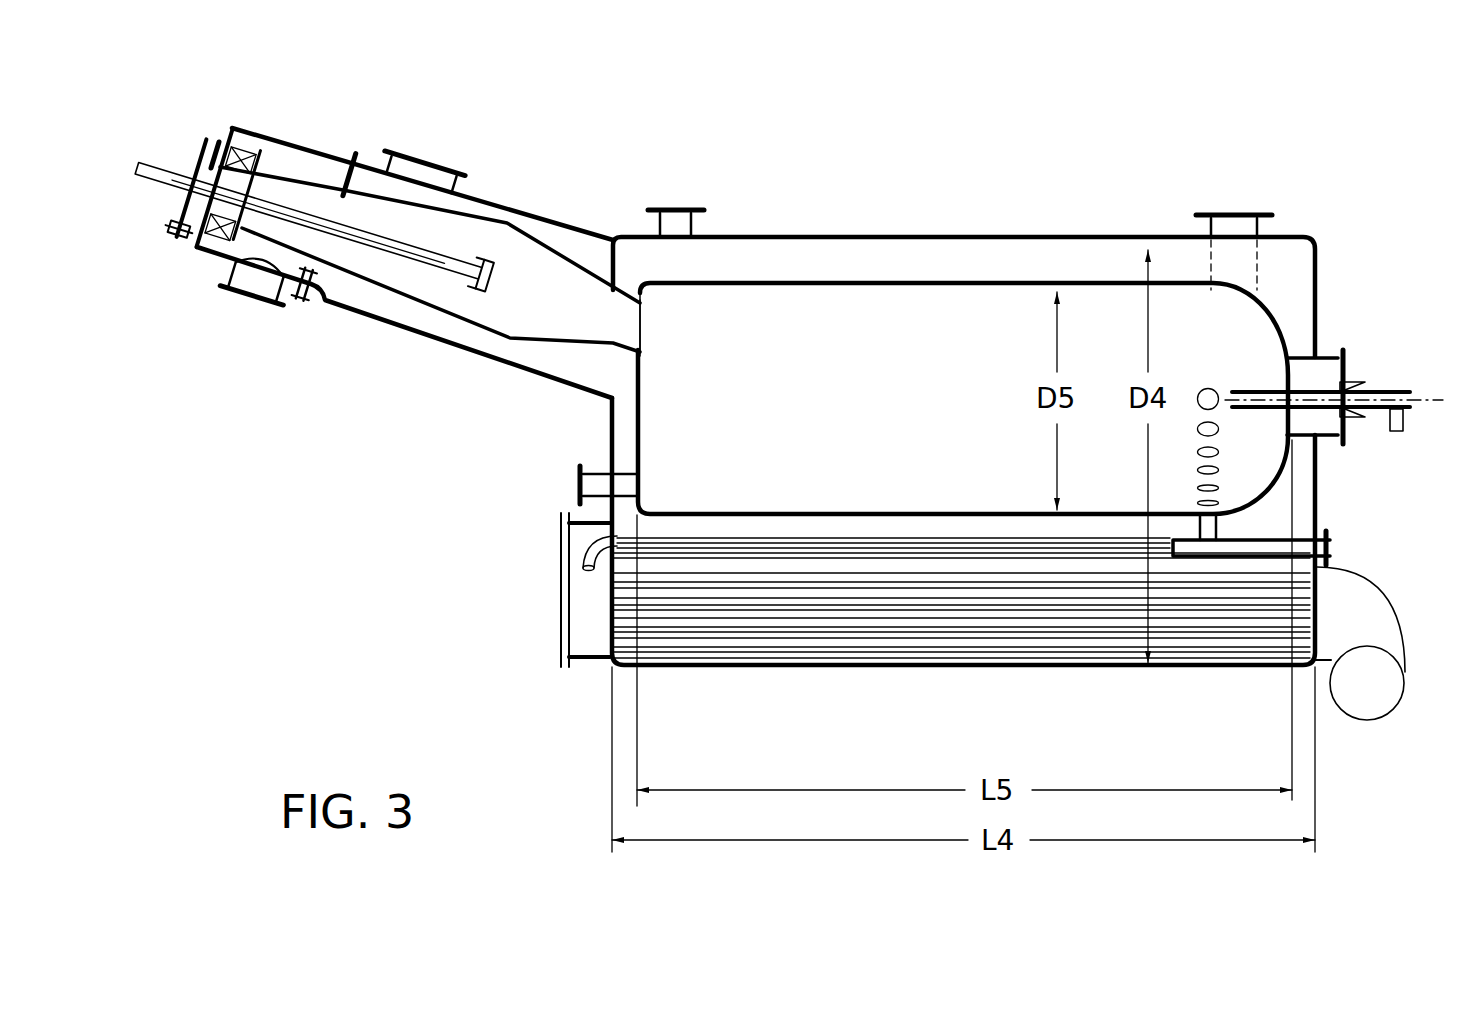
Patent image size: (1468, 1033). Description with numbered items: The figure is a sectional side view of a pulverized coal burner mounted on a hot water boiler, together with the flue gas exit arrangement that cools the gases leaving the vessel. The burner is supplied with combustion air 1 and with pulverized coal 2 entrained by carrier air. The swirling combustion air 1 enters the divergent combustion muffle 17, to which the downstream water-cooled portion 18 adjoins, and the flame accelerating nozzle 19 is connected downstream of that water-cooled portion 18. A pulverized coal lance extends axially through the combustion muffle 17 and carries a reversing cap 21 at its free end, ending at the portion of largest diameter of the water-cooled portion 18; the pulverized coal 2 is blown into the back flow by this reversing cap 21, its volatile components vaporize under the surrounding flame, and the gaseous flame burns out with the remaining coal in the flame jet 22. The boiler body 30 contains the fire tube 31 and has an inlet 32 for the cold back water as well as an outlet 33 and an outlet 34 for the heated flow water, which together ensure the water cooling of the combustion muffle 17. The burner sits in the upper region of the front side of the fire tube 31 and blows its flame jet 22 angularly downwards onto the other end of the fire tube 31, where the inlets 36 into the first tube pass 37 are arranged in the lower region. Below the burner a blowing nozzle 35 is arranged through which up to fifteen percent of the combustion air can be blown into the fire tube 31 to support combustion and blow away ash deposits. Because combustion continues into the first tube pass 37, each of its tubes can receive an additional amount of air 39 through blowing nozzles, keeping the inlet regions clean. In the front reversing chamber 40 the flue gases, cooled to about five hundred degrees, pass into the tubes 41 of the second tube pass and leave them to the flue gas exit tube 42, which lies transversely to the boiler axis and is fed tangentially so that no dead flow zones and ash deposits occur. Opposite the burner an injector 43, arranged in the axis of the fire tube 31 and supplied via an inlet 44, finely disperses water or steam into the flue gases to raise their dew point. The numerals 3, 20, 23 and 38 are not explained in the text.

The combustion air 1 is at (240, 313).
The pulverized coal 2 is at (122, 158).
The burner 3 is at (287, 137).
The combustion muffle 17 is at (307, 173).
The water-cooled portion 18 is at (378, 193).
The flame accelerating nozzle 19 is at (567, 262).
The fuel lance 20 is at (407, 250).
The reversing cap 21 is at (482, 268).
The flame jet 22 is at (645, 327).
The lance support 23 is at (187, 247).
The boiler body 30 is at (900, 235).
The fire tube 31 is at (980, 283).
The inlet for cold back water 32 is at (1235, 198).
The outlet 33 is at (437, 135).
The outlet for heated flow water 34 is at (676, 200).
The blowing nozzle 35 is at (552, 487).
The inlets 36 is at (1217, 523).
The first tube pass 37 is at (1117, 550).
The distribution channel 38 is at (1253, 547).
The additional amount of air 39 is at (1337, 547).
The front reversing chamber 40 is at (587, 598).
The tubes 41 is at (762, 625).
The flue gas exit tube 42 is at (1380, 722).
The injector 43 is at (1368, 395).
The inlet 44 is at (1395, 431).